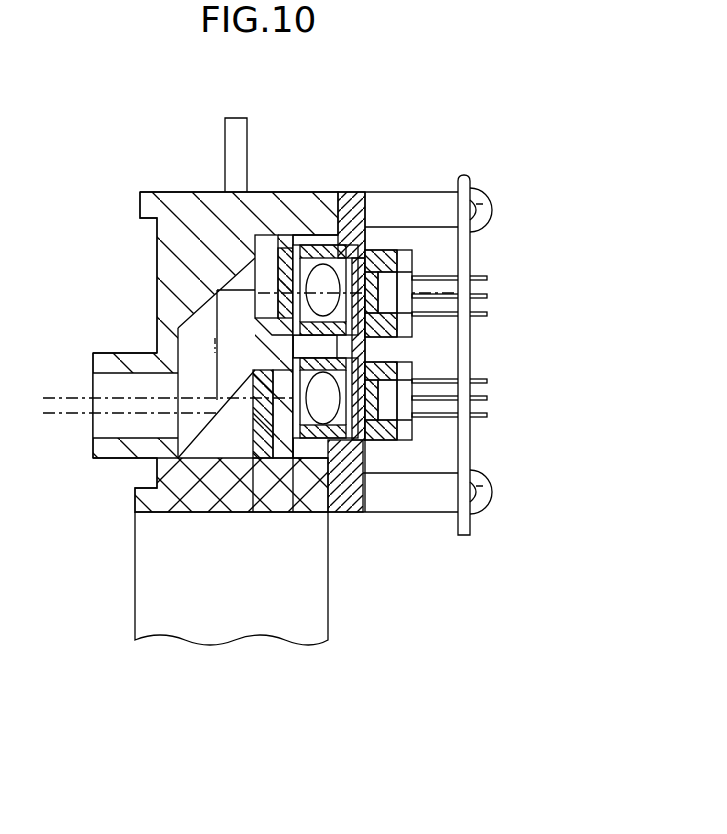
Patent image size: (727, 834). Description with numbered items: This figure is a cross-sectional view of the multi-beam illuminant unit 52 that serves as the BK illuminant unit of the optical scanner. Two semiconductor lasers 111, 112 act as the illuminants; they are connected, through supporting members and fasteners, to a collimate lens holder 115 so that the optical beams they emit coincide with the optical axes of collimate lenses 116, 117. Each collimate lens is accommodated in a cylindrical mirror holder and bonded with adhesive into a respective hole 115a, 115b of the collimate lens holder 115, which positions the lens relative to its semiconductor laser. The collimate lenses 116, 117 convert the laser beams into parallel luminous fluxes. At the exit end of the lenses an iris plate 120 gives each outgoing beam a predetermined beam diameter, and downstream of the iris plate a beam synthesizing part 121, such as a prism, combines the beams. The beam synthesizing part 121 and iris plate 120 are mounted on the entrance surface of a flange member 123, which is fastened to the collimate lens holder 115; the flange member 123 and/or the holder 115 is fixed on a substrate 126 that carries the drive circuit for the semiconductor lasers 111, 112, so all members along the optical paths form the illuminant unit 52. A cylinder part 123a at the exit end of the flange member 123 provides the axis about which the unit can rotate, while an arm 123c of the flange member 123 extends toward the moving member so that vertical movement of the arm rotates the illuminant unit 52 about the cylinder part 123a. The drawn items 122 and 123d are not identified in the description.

The multi-beam illuminant unit 52 is at (506, 196).
The semiconductor laser 111 is at (394, 440).
The semiconductor laser 112 is at (406, 262).
The collimate lens holder 115 is at (347, 482).
The hole 115a is at (254, 513).
The hole 115b is at (312, 246).
The collimate lens 116 is at (311, 465).
The collimate lens 117 is at (356, 245).
The iris plate 120 is at (274, 247).
The beam synthesizing part 121 is at (160, 287).
The bottom wall 122 is at (219, 513).
The flange member 123 is at (150, 514).
The cylinder part 123a is at (108, 450).
The arm 123c is at (328, 590).
The projection 123d is at (225, 152).
The substrate 126 is at (470, 441).